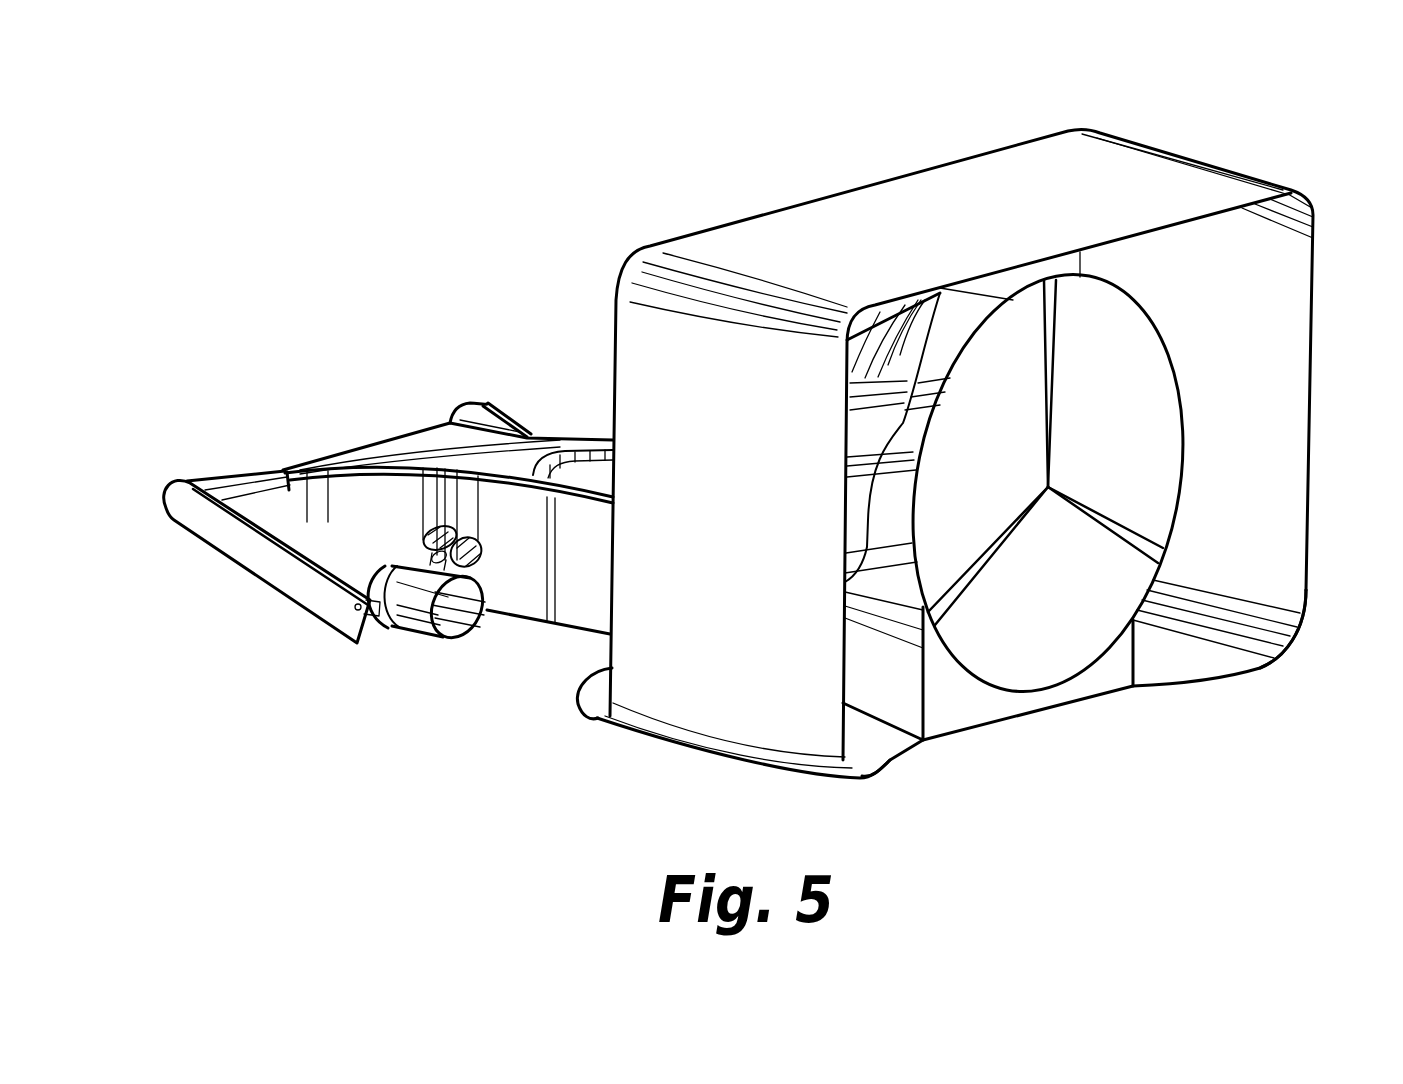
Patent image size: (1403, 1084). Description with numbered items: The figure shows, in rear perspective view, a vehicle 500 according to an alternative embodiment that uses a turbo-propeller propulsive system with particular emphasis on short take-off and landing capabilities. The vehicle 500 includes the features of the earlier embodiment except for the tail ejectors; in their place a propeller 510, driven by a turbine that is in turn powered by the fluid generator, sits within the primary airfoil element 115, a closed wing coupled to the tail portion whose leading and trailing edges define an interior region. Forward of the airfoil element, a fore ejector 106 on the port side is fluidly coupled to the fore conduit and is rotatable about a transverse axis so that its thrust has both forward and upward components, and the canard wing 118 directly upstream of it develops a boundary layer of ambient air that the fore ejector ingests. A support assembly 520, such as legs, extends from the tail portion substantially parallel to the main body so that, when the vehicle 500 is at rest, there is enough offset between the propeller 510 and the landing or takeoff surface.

The vehicle 500 is at (411, 135).
The primary airfoil element 115 is at (1201, 130).
The second canard wing 118 is at (227, 465).
The second fore ejector 106 is at (422, 610).
The propeller 510 is at (1042, 653).
The support assembly 520 is at (868, 776).